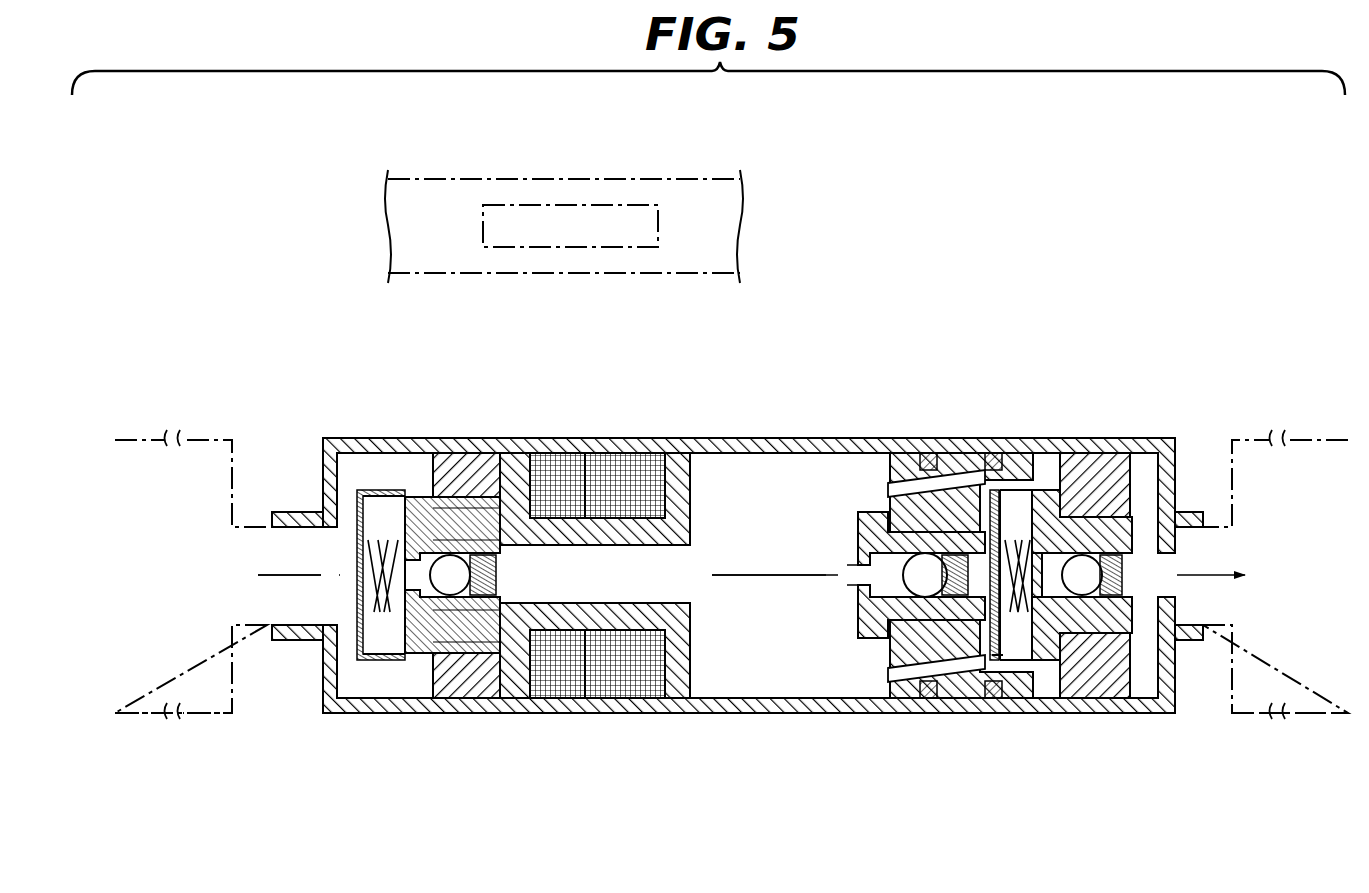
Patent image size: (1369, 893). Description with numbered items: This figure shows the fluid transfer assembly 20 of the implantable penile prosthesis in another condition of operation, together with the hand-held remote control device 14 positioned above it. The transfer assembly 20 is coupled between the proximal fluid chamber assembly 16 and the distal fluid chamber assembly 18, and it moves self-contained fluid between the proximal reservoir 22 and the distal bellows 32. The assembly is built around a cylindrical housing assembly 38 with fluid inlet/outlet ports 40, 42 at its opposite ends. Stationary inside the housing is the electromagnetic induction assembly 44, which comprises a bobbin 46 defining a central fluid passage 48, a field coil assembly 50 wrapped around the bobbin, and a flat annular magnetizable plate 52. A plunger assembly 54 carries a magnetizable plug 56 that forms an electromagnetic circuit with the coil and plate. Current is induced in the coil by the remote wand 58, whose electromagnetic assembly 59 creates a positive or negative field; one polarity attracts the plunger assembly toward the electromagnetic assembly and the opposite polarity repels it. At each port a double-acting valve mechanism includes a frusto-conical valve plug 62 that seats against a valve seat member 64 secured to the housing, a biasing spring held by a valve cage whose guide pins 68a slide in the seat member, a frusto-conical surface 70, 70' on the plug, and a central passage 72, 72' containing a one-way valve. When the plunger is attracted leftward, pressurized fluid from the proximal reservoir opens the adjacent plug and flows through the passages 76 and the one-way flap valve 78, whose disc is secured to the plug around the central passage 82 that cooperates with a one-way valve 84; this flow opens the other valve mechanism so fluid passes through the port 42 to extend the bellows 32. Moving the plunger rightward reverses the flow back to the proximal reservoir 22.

The hand-held remote control device 14 is at (622, 150).
The proximal fluid chamber assembly 16 is at (1233, 440).
The distal fluid chamber assembly 18 is at (204, 440).
The fluid transfer assembly 20 is at (981, 574).
The proximal reservoir 22 is at (1252, 713).
The bellows 32 is at (224, 713).
The cylindrical housing assembly 38 is at (712, 438).
The fluid inlet/outlet port 40 is at (1182, 522).
The fluid inlet/outlet port 42 is at (295, 522).
The electromagnetic induction assembly 44 is at (611, 536).
The stationary bobbin 46 is at (690, 490).
The central fluid passage 48 is at (596, 545).
The field coil assembly 50 is at (565, 470).
The magnetizable plate 52 is at (600, 470).
The plunger assembly 54 is at (940, 455).
The magnetizable plug 56 is at (858, 510).
The remote handheld electromagnetic wand 58 is at (430, 179).
The electromagnetic assembly 59 is at (587, 222).
The valve plug 62 is at (1100, 665).
The valve seat member 64 is at (1050, 500).
The guide pins 68a is at (1018, 660).
The frusto-conical surface 70 is at (1045, 493).
The frusto-conical surface 70' is at (383, 655).
The central passage 72 is at (1070, 663).
The central passage 72' is at (450, 514).
The passages 76 is at (990, 495).
The one-way flap valve 78 is at (886, 488).
The central passage 82 is at (858, 586).
The one-way valve 84 is at (890, 683).